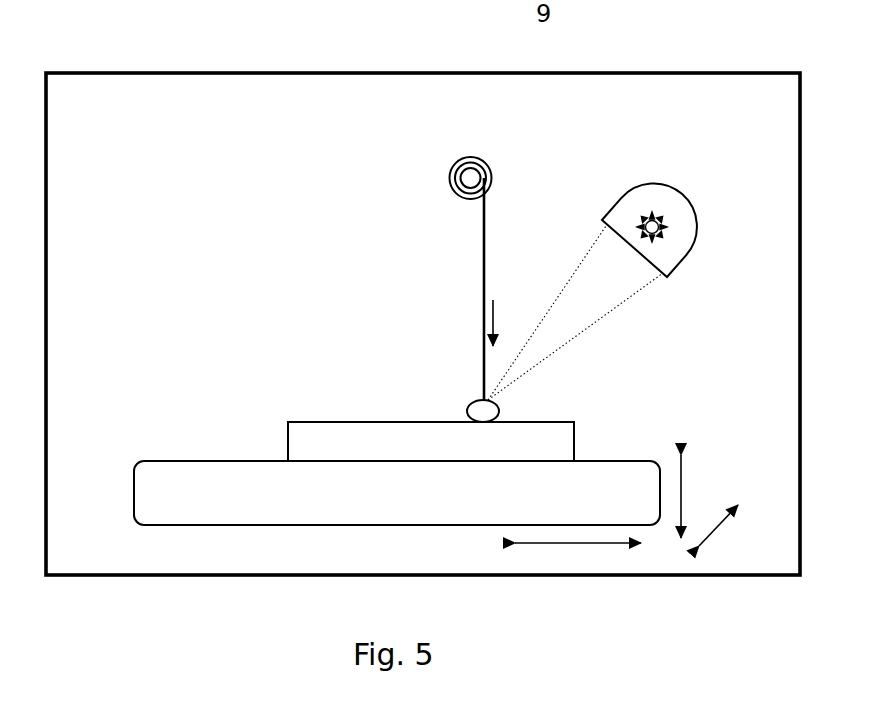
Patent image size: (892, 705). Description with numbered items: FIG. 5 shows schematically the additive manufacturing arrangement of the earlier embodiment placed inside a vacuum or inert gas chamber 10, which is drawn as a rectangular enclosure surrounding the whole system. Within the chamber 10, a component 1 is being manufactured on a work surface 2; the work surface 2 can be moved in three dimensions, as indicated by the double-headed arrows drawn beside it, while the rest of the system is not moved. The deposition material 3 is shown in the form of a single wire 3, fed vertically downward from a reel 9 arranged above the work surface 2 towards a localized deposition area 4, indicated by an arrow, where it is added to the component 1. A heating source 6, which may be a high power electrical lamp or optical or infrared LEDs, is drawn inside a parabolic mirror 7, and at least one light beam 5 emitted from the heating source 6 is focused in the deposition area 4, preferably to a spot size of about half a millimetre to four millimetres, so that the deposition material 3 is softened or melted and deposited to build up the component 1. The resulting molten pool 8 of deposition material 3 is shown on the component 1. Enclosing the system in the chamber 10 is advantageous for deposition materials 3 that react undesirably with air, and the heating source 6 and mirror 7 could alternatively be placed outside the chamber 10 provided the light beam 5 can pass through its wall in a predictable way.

The component 1 is at (302, 433).
The work surface 2 is at (152, 487).
The deposition material 3 is at (483, 287).
The deposition area 4 is at (455, 387).
The light beam 5 is at (585, 310).
The heating source 6 is at (662, 232).
The parabolic mirror 7 is at (690, 208).
The molten pool 8 is at (490, 414).
The reel 9 is at (478, 170).
The vacuum or inert gas chamber 10 is at (243, 72).